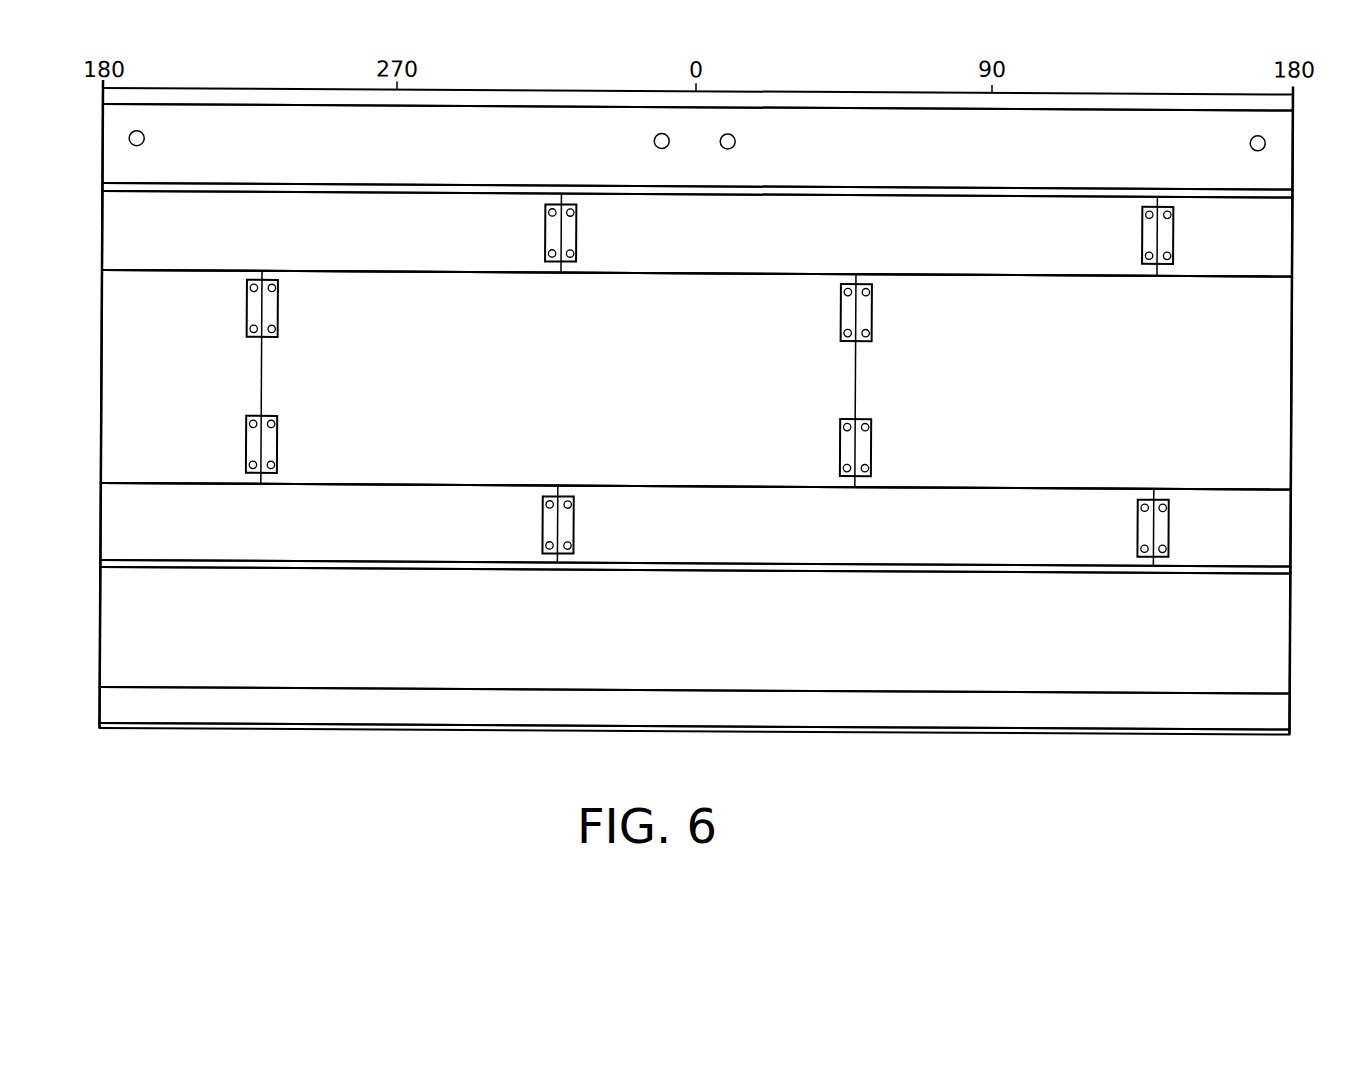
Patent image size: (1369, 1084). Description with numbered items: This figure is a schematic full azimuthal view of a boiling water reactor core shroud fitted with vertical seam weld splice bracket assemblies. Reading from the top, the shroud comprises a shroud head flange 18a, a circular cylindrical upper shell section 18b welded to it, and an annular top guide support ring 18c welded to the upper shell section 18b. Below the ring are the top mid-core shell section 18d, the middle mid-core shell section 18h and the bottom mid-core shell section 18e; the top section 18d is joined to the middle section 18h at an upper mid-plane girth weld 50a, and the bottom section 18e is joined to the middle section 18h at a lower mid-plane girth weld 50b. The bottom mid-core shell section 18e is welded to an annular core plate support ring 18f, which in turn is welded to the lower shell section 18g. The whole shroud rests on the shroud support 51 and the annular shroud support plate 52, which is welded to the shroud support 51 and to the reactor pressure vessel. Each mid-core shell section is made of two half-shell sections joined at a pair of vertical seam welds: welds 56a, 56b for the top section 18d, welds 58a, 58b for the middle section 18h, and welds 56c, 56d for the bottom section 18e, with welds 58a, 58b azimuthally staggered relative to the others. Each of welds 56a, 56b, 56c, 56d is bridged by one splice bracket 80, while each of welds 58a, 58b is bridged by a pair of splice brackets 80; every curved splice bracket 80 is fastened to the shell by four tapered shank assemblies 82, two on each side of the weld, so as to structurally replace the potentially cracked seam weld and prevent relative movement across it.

The shroud head flange 18a is at (1289, 94).
The upper shell section 18b is at (1289, 148).
The top guide support ring 18c is at (1281, 187).
The top mid-core shell section 18d is at (1289, 226).
The bottom mid-core shell section 18e is at (1286, 518).
The core plate support ring 18f is at (1278, 565).
The lower shell section 18g is at (1286, 636).
The middle mid-core shell section 18h is at (1286, 379).
The upper mid-plane girth weld 50a is at (943, 268).
The lower mid-plane girth weld 50b is at (943, 482).
The shroud support 51 is at (1286, 701).
The shroud support plate 52 is at (1181, 729).
The vertical seam weld 56a is at (560, 263).
The vertical seam weld 56b is at (1156, 264).
The vertical seam weld 56c is at (556, 555).
The vertical seam weld 56d is at (1152, 554).
The vertical seam weld 58a is at (265, 376).
The vertical seam weld 58b is at (858, 376).
The splice bracket 80 is at (578, 233).
The tapered shank assembly 82 is at (548, 211).